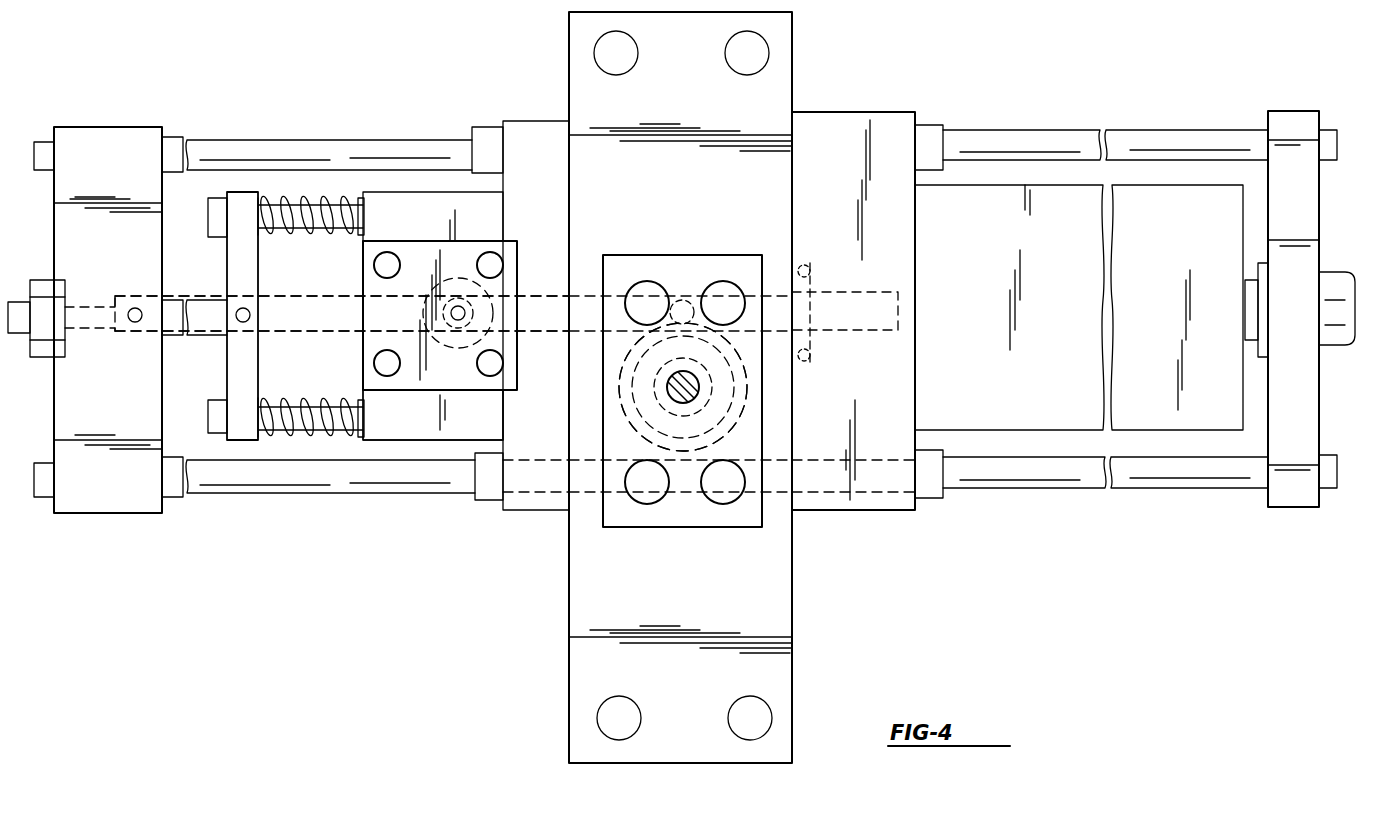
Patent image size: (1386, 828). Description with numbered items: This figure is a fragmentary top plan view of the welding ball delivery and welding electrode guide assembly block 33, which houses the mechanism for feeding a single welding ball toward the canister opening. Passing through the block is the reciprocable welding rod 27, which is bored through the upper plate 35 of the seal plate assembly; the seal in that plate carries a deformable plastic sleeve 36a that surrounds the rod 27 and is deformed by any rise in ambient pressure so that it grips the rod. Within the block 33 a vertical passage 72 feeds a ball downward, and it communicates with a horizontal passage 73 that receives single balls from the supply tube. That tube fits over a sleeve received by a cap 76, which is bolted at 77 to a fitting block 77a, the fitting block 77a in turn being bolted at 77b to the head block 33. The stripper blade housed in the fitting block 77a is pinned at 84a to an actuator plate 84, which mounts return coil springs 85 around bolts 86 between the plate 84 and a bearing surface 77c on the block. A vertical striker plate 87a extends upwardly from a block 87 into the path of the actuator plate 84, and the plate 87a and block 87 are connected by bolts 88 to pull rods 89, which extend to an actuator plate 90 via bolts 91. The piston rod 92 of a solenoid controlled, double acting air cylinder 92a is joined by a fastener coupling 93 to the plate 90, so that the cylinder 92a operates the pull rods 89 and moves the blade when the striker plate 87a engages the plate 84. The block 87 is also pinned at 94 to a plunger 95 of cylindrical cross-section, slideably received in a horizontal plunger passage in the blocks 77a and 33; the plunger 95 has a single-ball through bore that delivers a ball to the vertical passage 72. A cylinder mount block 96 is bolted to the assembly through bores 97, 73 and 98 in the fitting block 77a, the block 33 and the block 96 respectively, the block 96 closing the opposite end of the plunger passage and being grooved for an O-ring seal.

The welding rod 27 is at (695, 398).
The welding ball delivery and welding electrode guide assembly block 33 is at (792, 553).
The upper plate 35 is at (740, 527).
The deformable plastic sleeve 36a is at (712, 378).
The vertical passage 72 is at (690, 300).
The horizontal passage 73 is at (610, 296).
The cap 76 is at (470, 247).
The bolts 77 is at (650, 300).
The fitting block 77a is at (540, 510).
The bolts 77b is at (487, 500).
The bearing surface 77c is at (368, 213).
The actuator plate 84 is at (230, 258).
The pin 84a is at (243, 308).
The return coil springs 85 is at (322, 200).
The bolts 86 is at (210, 222).
The block 87 is at (115, 135).
The vertical striker plate 87a is at (65, 295).
The bolts 88 is at (42, 142).
The pull rods 89 is at (225, 150).
The actuator plate 90 is at (1310, 215).
The bolts 91 is at (1335, 130).
The piston rod 92 is at (1245, 290).
The air cylinder 92a is at (1200, 417).
The fastener coupling 93 is at (1330, 345).
The pin 94 is at (137, 322).
The plunger 95 is at (215, 335).
The block 96 is at (897, 112).
The bolt bore 97 is at (535, 333).
The bolt bore 98 is at (868, 292).